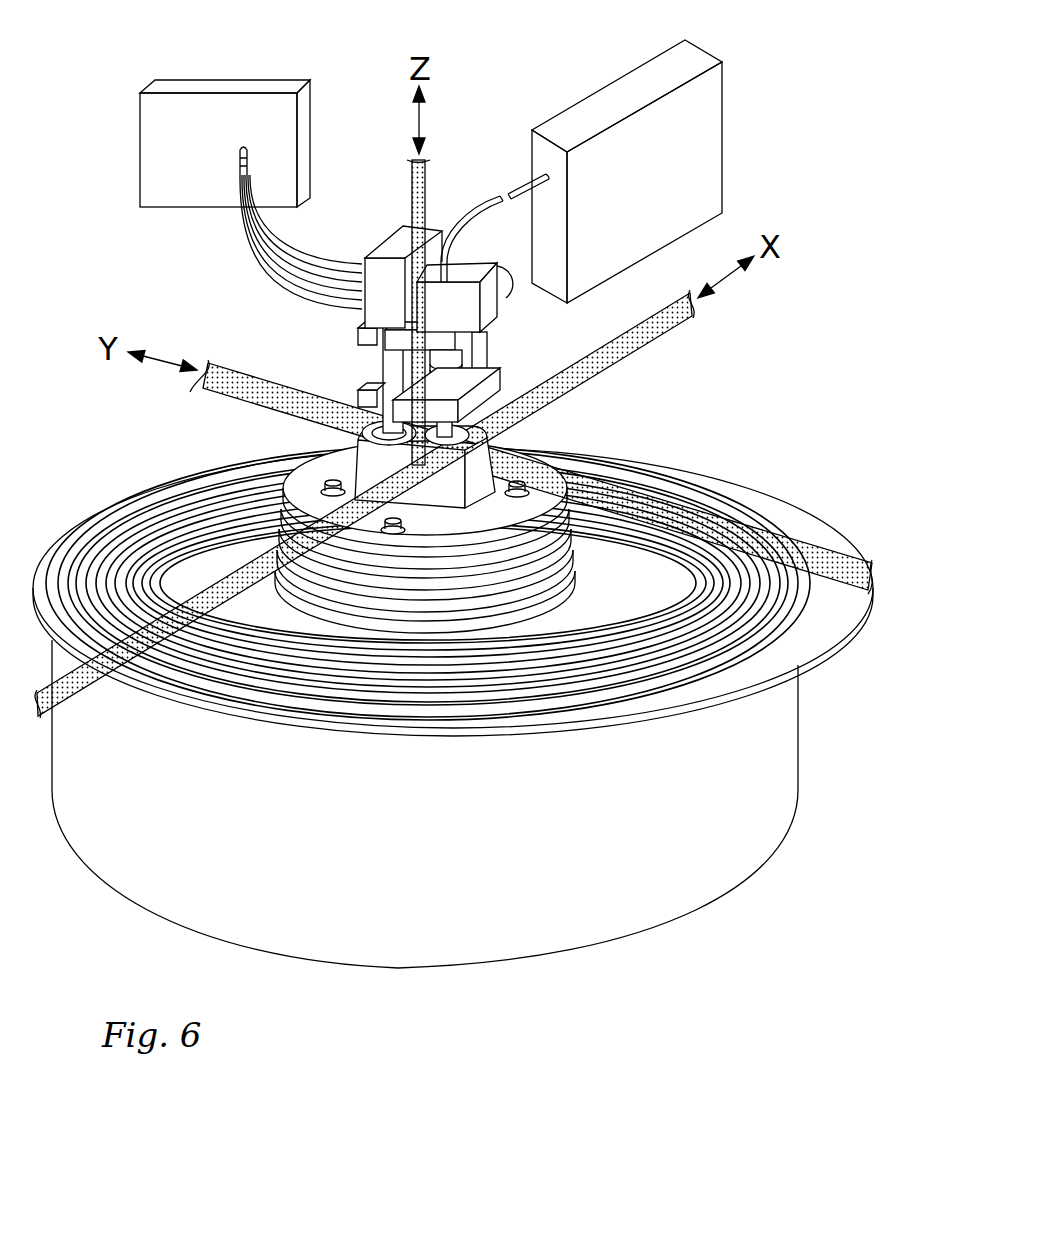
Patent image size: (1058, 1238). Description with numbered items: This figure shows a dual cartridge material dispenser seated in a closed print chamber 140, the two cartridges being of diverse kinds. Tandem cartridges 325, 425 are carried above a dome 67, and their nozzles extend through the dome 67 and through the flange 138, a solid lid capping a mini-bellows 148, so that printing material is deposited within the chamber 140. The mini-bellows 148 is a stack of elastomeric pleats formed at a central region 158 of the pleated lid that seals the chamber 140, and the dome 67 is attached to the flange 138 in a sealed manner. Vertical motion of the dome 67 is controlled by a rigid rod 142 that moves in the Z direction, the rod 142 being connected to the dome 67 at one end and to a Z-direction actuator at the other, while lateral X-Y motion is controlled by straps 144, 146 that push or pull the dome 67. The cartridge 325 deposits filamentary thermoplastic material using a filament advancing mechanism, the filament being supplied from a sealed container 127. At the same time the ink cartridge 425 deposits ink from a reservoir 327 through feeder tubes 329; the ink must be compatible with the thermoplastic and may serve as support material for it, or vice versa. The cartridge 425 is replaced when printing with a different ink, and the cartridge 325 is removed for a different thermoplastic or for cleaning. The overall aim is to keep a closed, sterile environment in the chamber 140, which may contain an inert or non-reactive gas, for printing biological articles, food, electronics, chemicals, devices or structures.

The dome 67 is at (500, 447).
The sealed container 127 is at (713, 121).
The solid lid 138 is at (483, 516).
The closed print chamber 140 is at (790, 753).
The rigid rod 142 is at (410, 212).
The strap 144 is at (93, 682).
The strap 146 is at (690, 303).
The mini-bellows 148 is at (400, 585).
The central region 158 is at (452, 638).
The cartridge 325 is at (468, 300).
The reservoir 327 is at (145, 135).
The feeder tubes 329 is at (262, 251).
The ink cartridge 425 is at (388, 253).